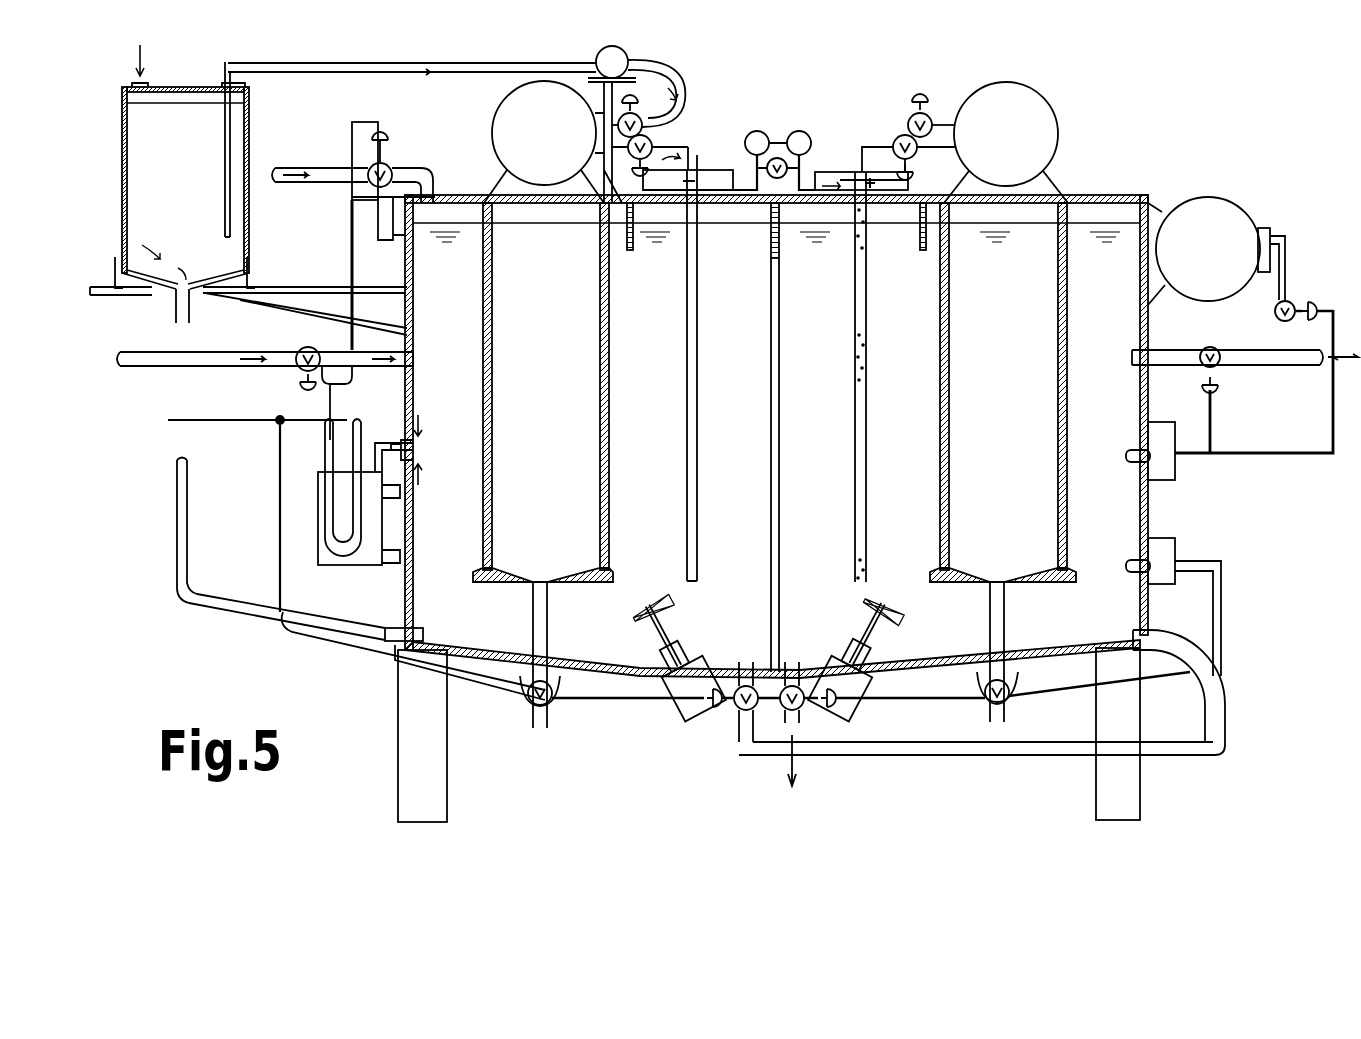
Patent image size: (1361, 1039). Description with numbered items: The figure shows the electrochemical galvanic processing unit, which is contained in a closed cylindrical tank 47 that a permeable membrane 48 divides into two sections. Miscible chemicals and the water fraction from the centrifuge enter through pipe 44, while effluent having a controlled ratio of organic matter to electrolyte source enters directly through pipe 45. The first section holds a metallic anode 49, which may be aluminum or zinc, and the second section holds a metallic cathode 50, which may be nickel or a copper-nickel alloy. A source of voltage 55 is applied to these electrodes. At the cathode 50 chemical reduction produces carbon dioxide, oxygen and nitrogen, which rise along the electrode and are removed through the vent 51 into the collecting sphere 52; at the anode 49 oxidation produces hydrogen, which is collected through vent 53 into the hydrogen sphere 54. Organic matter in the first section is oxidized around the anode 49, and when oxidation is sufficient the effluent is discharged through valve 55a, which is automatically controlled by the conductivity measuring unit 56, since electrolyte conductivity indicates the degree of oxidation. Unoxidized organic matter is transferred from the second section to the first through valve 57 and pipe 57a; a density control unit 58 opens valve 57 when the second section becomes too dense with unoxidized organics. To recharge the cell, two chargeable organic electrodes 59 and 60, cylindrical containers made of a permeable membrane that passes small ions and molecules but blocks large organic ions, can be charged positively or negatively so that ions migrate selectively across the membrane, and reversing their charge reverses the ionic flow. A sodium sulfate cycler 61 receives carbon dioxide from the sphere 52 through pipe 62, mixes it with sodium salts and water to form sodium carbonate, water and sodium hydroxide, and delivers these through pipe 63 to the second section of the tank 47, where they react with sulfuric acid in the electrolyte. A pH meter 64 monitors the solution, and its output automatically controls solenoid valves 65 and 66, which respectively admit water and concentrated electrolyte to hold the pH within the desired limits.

The pipe 44 is at (270, 350).
The pipe 45 is at (330, 168).
The closed cylindrical tank 47 is at (1150, 511).
The permeable membrane 48 is at (781, 540).
The metallic anode 49 is at (868, 355).
The metallic cathode 50 is at (712, 437).
The vent 51 is at (694, 162).
The collecting sphere 52 is at (488, 128).
The vent 53 is at (890, 146).
The hydrogen sphere 54 is at (1040, 87).
The source of voltage 55 is at (781, 128).
The valve 55a is at (805, 710).
The conductivity measuring unit 56 is at (1215, 576).
The valve 57 is at (738, 712).
The pipe 57a is at (977, 754).
The density control unit 58 is at (318, 508).
The chargeable organic electrode 59 is at (586, 586).
The chargeable organic electrode 60 is at (1025, 588).
The sodium sulfate cycler 61 is at (182, 88).
The pipe 62 is at (562, 59).
The pipe 63 is at (250, 618).
The pH meter 64 is at (1176, 478).
The solenoid valve 65 is at (1208, 349).
The solenoid valve 66 is at (1292, 300).